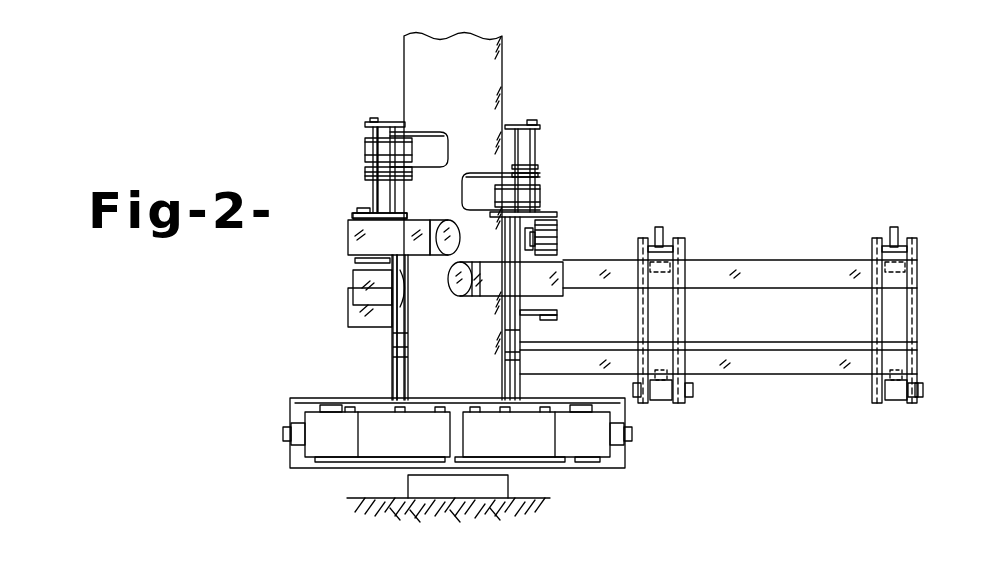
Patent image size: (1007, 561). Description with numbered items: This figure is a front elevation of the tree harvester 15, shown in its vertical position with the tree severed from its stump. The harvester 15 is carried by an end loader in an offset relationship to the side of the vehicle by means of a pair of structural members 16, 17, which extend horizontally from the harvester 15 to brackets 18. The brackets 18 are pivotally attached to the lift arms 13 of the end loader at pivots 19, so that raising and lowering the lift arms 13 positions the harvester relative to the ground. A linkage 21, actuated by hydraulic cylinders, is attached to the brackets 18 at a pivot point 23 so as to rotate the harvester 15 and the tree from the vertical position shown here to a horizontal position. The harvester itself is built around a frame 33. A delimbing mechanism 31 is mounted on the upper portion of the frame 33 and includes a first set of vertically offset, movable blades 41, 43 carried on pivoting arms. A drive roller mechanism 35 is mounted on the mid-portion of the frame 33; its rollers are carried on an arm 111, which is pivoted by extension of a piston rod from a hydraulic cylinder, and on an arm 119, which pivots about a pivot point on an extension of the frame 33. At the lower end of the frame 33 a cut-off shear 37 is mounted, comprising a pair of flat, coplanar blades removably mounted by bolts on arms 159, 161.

The lift arm 13 is at (660, 398).
The tree harvester 15 is at (602, 217).
The structural member 16 is at (820, 278).
The structural member 17 is at (830, 368).
The bracket 18 is at (680, 316).
The pivot 19 is at (693, 392).
The linkage 21 is at (662, 232).
The pivot point 23 is at (685, 252).
The delimbing mechanism 31 is at (576, 134).
The frame 33 is at (395, 335).
The drive roller mechanism 35 is at (323, 268).
The cut-off shear 37 is at (250, 417).
The movable blade 41 is at (422, 140).
The movable blade 43 is at (463, 190).
The arm 111 is at (400, 252).
The arm 119 is at (540, 292).
The arm 159 is at (430, 447).
The arm 161 is at (530, 447).